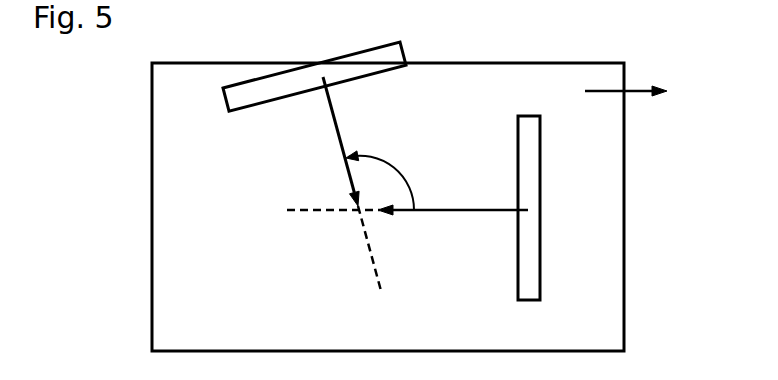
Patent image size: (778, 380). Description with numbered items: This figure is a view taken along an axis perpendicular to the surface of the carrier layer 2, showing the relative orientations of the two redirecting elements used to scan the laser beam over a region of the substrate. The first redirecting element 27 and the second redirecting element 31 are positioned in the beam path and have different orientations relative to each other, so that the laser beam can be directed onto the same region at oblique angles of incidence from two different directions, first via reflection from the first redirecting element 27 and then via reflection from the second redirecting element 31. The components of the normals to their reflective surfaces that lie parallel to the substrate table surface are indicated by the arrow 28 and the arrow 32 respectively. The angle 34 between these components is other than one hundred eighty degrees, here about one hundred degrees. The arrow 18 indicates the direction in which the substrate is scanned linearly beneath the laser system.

The carrier layer 2 is at (173, 298).
The first redirecting element 27 is at (275, 96).
The arrow 28 is at (338, 128).
The second redirecting element 31 is at (533, 165).
The arrow 32 is at (452, 210).
The angle 34 is at (384, 177).
The arrow 18 is at (628, 91).